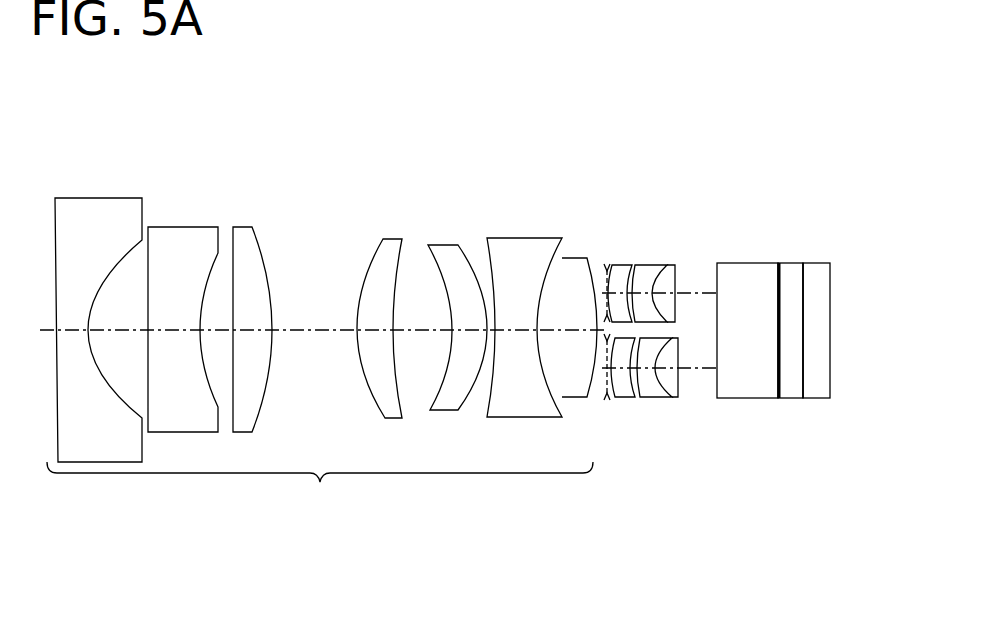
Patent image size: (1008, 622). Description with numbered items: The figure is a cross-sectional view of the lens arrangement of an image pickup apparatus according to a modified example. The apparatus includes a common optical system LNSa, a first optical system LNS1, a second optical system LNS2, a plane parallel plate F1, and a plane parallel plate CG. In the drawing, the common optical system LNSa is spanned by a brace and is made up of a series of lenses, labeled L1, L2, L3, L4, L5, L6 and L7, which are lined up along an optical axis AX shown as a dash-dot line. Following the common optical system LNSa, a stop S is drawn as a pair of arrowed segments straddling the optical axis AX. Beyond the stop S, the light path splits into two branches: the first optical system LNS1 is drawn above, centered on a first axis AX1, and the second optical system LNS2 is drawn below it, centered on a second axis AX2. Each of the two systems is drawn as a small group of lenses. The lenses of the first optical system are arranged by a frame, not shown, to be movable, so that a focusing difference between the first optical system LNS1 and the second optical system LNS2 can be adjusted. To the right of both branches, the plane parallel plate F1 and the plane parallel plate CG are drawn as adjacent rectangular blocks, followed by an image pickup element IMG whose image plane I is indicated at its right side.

The first lens L1 is at (102, 197).
The second lens L2 is at (182, 227).
The third lens L3 is at (242, 227).
The fourth lens L4 is at (393, 239).
The fifth lens L5 is at (443, 245).
The sixth lens L6 is at (515, 238).
The seventh lens L7 is at (575, 258).
The optical axis AX is at (307, 327).
The first optical axis AX1 is at (697, 290).
The second optical axis AX2 is at (700, 370).
The aperture stop S is at (604, 264).
The common optical system LNSa is at (320, 489).
The first optical system LNS1 is at (664, 220).
The second optical system LNS2 is at (671, 440).
The plane parallel plate F1 is at (745, 263).
The plane parallel plate CG is at (790, 263).
The image sensor IMG is at (815, 275).
The image plane I is at (803, 302).